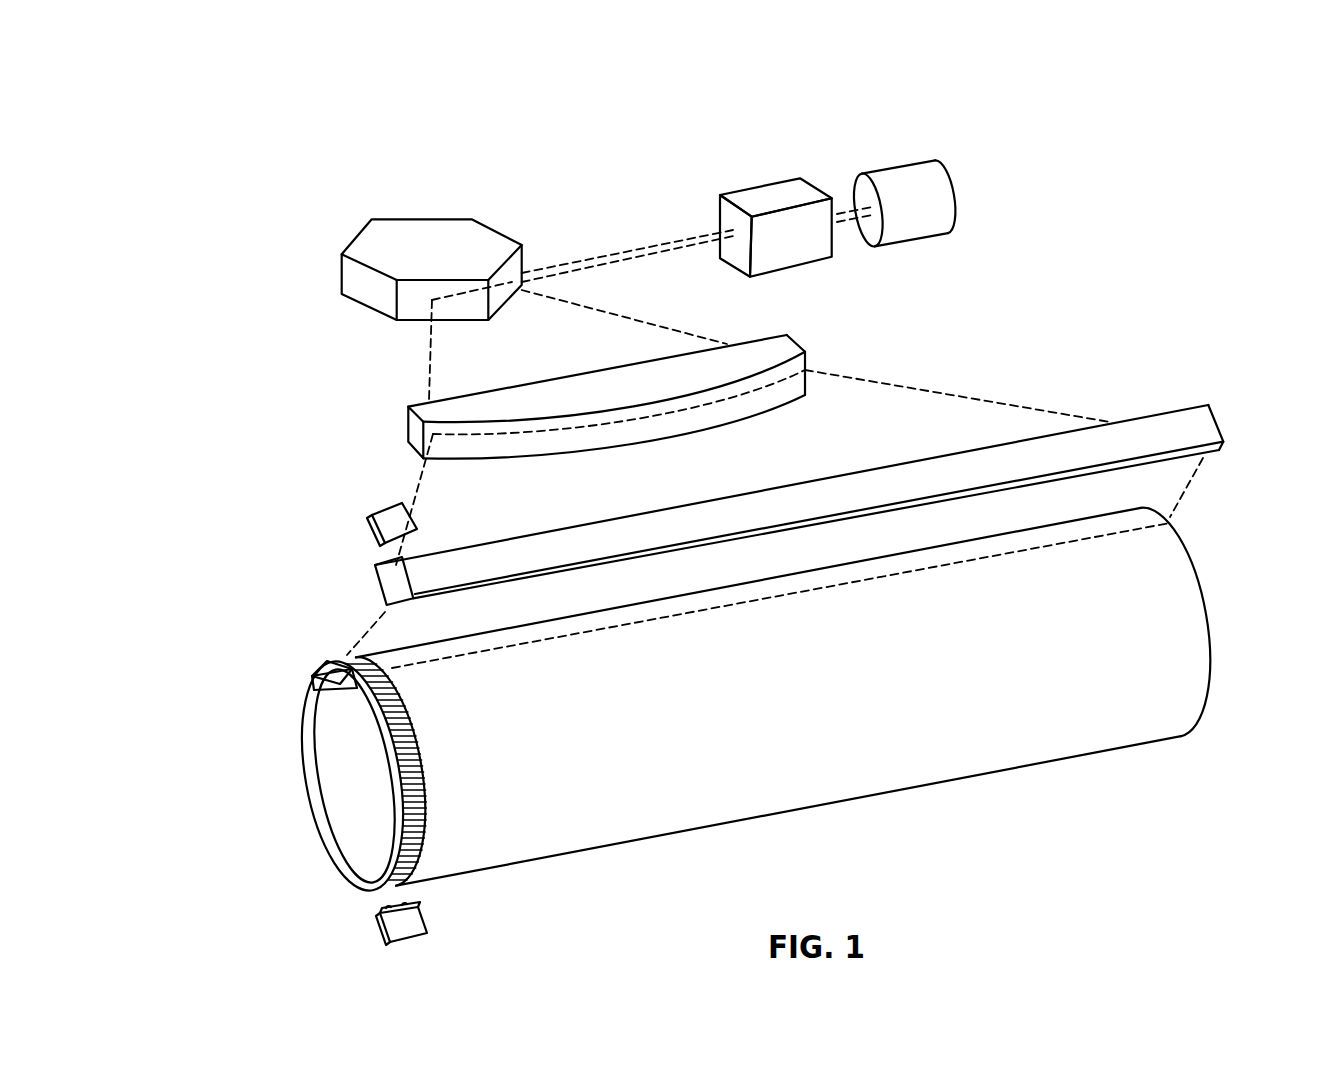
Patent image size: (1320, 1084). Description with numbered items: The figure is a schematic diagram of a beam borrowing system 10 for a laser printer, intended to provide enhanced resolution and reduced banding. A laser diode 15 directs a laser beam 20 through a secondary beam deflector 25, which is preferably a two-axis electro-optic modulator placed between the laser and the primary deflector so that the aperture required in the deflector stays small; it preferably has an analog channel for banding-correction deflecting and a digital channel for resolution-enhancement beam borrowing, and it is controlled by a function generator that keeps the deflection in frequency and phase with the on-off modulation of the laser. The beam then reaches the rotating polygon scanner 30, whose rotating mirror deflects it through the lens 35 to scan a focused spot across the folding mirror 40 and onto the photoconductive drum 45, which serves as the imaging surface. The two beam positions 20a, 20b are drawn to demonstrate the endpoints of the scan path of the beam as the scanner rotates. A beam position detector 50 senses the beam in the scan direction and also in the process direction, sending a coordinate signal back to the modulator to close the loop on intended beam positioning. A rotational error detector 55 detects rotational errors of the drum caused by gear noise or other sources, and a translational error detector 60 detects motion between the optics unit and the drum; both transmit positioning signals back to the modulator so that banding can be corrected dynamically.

The beam borrowing system 10 is at (1013, 127).
The laser diode 15 is at (957, 185).
The laser beam 20 is at (840, 220).
The beam endpoint 20a is at (882, 382).
The beam endpoint 20b is at (410, 485).
The secondary beam deflector 25 is at (757, 188).
The polygon scanner 30 is at (358, 237).
The lens 35 is at (407, 420).
The folding mirror 40 is at (1182, 408).
The photoconductive drum 45 is at (307, 713).
The beam position detector 50 is at (367, 522).
The rotational error detector 55 is at (380, 930).
The translational error detector 60 is at (313, 673).